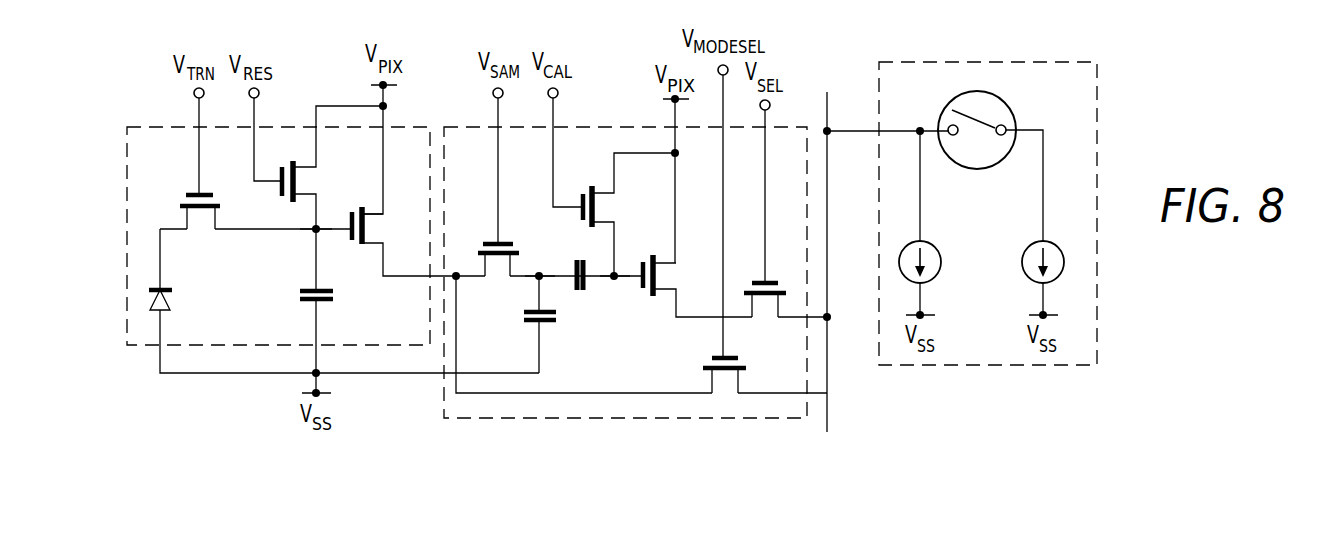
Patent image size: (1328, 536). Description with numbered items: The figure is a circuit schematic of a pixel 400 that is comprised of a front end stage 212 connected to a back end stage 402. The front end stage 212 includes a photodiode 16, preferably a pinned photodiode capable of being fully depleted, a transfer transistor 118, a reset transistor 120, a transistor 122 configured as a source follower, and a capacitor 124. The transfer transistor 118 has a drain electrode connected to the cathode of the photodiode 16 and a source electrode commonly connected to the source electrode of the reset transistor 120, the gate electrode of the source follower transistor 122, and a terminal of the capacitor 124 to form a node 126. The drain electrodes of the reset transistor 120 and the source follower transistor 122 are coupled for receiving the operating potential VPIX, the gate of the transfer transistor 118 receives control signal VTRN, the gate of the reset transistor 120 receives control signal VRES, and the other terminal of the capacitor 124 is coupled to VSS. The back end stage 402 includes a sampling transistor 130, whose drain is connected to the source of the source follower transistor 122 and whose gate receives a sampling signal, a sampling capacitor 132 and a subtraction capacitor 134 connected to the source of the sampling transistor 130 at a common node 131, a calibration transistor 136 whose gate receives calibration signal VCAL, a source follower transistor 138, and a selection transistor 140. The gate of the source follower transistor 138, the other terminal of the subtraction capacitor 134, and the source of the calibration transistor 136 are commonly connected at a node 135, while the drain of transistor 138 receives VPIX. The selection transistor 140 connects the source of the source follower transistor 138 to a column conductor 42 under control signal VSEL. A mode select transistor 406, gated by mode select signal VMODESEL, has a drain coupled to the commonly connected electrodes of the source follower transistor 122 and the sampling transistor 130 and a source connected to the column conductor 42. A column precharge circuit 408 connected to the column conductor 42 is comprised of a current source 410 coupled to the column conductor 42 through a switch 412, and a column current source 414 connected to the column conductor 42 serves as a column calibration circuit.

The photodiode 16 is at (175, 289).
The column conductor 42 is at (829, 109).
The transfer transistor 118 is at (201, 226).
The reset transistor 120 is at (311, 185).
The source follower transistor 122 is at (373, 226).
The capacitor 124 is at (307, 301).
The node 126 is at (314, 233).
The sampling transistor 130 is at (501, 265).
The sample node 131 is at (539, 272).
The sampling capacitor 132 is at (556, 321).
The subtraction capacitor 134 is at (584, 291).
The output node 135 is at (614, 281).
The calibration transistor 136 is at (607, 206).
The source follower transistor 138 is at (669, 273).
The selection transistor 140 is at (766, 302).
The front end stage 212 is at (160, 126).
The pixel 400 is at (1242, 280).
The back end stage 402 is at (641, 126).
The mode select transistor 406 is at (706, 367).
The column precharge circuit 408 is at (1099, 101).
The current source 410 is at (1066, 232).
The switch 412 is at (1000, 92).
The column current source 414 is at (943, 232).